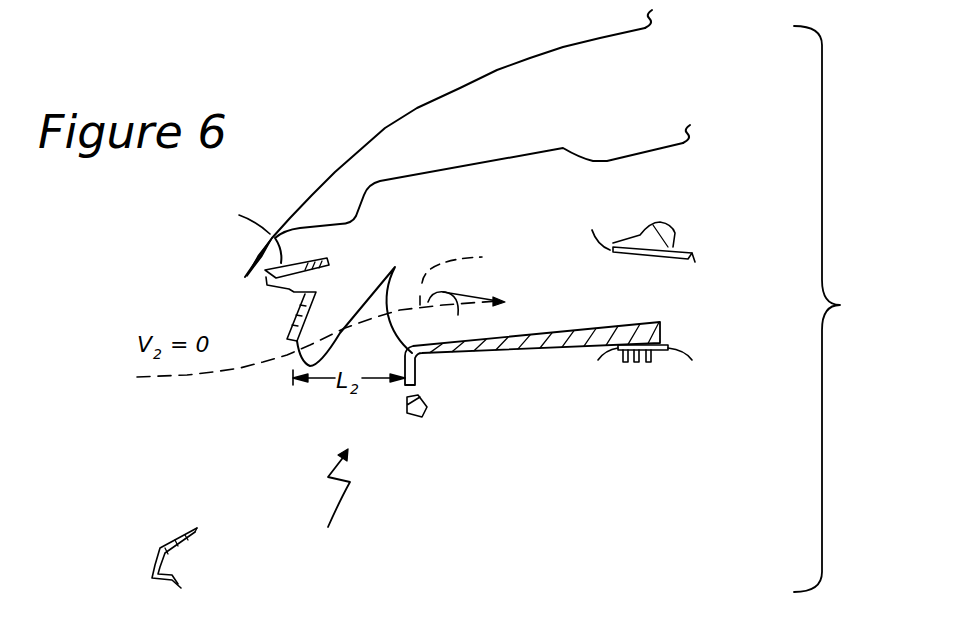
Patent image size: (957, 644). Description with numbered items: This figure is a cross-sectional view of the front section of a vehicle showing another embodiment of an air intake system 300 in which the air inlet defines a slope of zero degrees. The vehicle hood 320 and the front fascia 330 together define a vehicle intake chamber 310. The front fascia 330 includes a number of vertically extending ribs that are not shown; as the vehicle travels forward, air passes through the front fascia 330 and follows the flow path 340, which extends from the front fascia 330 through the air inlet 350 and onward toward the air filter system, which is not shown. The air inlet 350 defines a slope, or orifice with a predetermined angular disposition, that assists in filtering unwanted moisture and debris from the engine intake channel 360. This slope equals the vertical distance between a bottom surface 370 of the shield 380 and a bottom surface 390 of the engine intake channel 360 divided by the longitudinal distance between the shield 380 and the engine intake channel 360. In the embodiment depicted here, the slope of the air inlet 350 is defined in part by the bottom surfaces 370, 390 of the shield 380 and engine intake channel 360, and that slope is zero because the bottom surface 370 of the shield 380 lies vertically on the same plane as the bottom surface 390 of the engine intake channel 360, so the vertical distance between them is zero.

The air intake system 300 is at (851, 309).
The vehicle intake chamber 310 is at (324, 505).
The vehicle hood 320 is at (412, 108).
The front fascia 330 is at (182, 532).
The flow path 340 is at (477, 280).
The air inlet 350 is at (362, 300).
The engine intake channel 360 is at (677, 225).
The bottom surface of shield 370 is at (290, 343).
The shield 380 is at (228, 217).
The bottom surface of engine intake channel 390 is at (453, 345).